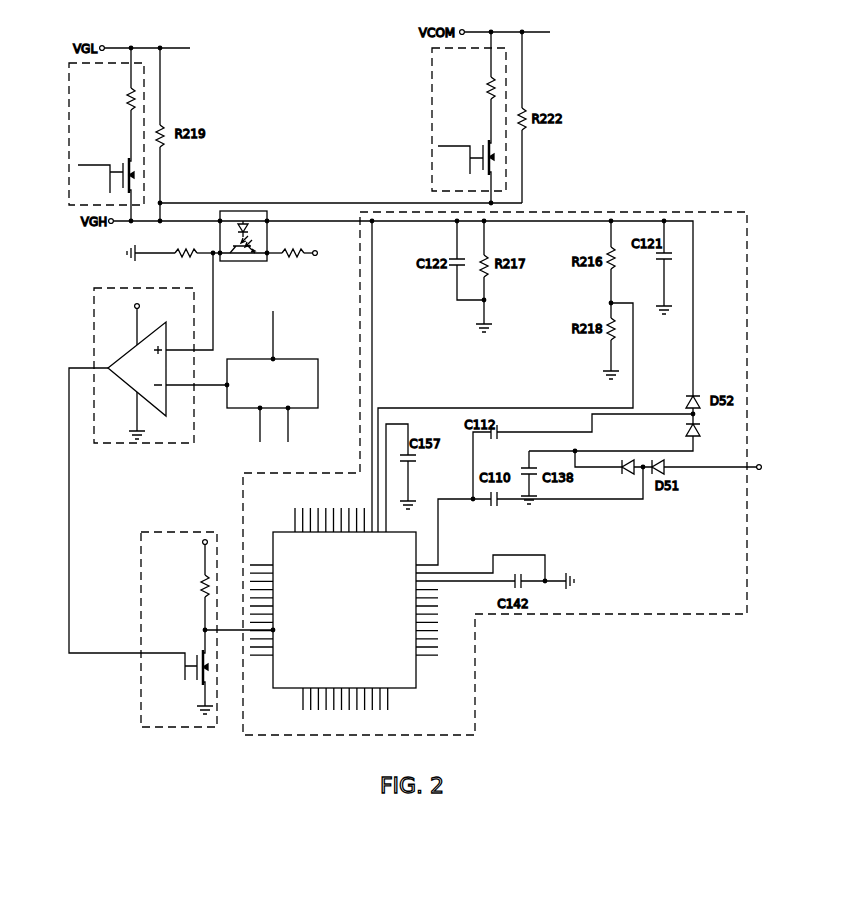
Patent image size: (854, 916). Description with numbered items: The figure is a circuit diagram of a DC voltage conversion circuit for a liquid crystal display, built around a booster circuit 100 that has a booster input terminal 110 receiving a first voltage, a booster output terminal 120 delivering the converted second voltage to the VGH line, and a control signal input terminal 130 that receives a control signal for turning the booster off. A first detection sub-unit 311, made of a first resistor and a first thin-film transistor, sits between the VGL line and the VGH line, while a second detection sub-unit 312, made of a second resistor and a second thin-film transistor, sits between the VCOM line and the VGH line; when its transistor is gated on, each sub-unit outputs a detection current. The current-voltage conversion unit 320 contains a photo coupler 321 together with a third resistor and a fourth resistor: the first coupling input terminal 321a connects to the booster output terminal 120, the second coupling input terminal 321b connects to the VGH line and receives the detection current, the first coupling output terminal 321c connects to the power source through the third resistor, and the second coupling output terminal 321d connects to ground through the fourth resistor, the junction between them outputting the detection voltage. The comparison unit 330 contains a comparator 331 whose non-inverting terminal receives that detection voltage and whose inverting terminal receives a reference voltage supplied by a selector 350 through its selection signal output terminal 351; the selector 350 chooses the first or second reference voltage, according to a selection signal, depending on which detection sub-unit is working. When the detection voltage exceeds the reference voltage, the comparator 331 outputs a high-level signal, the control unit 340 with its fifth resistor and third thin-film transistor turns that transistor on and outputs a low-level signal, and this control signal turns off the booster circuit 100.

The booster circuit 100 is at (598, 212).
The booster input terminal 110 is at (769, 478).
The booster output terminal 120 is at (371, 220).
The control signal input terminal 130 is at (273, 630).
The first detection sub-unit 311 is at (69, 120).
The second detection sub-unit 312 is at (432, 105).
The current-voltage conversion unit 320 is at (165, 243).
The photo coupler 321 is at (243, 246).
The first coupling input terminal 321a is at (269, 219).
The second coupling input terminal 321b is at (220, 219).
The first coupling output terminal 321c is at (267, 258).
The second coupling output terminal 321d is at (220, 251).
The comparison unit 330 is at (127, 288).
The comparator 331 is at (133, 345).
The control unit 340 is at (185, 532).
The selector 350 is at (290, 359).
The selection signal output terminal 351 is at (227, 385).